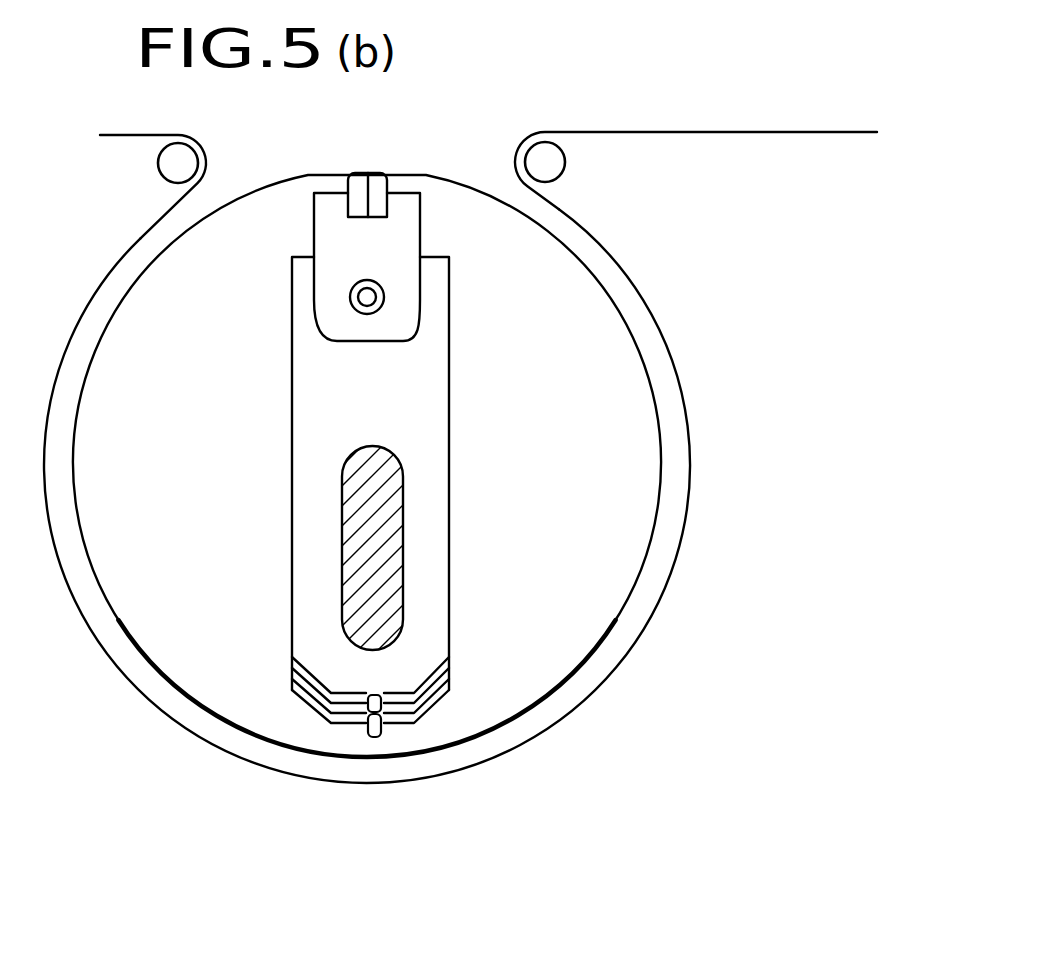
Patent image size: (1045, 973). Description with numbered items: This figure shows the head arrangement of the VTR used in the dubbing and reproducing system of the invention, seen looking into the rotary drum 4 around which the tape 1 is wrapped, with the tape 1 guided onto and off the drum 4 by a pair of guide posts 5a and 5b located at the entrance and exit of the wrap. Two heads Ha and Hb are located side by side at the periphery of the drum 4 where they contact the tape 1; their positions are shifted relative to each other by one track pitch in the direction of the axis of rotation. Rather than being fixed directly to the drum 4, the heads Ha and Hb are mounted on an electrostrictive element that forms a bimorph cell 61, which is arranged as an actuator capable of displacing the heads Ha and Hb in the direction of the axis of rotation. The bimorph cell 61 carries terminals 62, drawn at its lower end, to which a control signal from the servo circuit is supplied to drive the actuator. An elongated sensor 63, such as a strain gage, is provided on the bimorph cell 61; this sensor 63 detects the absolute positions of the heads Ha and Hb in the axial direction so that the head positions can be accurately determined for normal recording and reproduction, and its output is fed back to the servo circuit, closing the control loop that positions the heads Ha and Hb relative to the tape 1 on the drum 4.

The recording sheet 1 is at (729, 131).
The platen drum 4 is at (644, 356).
The guide roller 5a is at (566, 168).
The guide roller 5b is at (157, 168).
The head Ha is at (359, 172).
The head Hb is at (384, 172).
The bimorph cell 61 is at (418, 502).
The terminals 62 is at (382, 718).
The sensor 63 is at (370, 566).